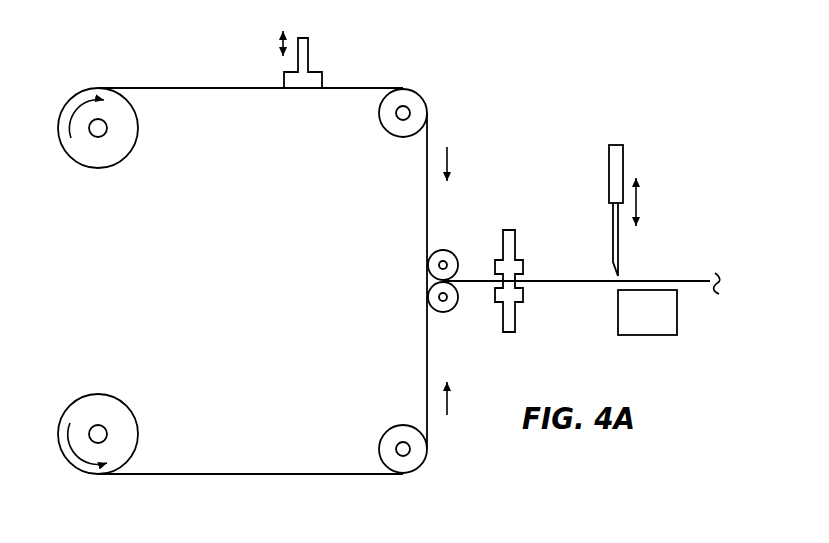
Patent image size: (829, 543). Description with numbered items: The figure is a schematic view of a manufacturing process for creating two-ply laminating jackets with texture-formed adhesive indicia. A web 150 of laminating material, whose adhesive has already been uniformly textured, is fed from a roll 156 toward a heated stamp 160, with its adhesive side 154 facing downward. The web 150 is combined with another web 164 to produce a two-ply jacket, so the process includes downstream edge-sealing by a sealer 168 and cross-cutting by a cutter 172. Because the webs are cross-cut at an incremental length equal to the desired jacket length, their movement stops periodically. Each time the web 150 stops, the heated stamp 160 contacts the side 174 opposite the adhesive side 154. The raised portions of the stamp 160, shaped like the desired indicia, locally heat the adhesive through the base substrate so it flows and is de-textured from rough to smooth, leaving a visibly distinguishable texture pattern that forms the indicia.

The web 150 is at (138, 43).
The adhesive side 154 is at (243, 94).
The roll 156 is at (111, 157).
The heated stamp 160 is at (309, 55).
The web 164 is at (313, 435).
The sealer 168 is at (508, 213).
The cutter 172 is at (678, 236).
The side 174 is at (198, 85).